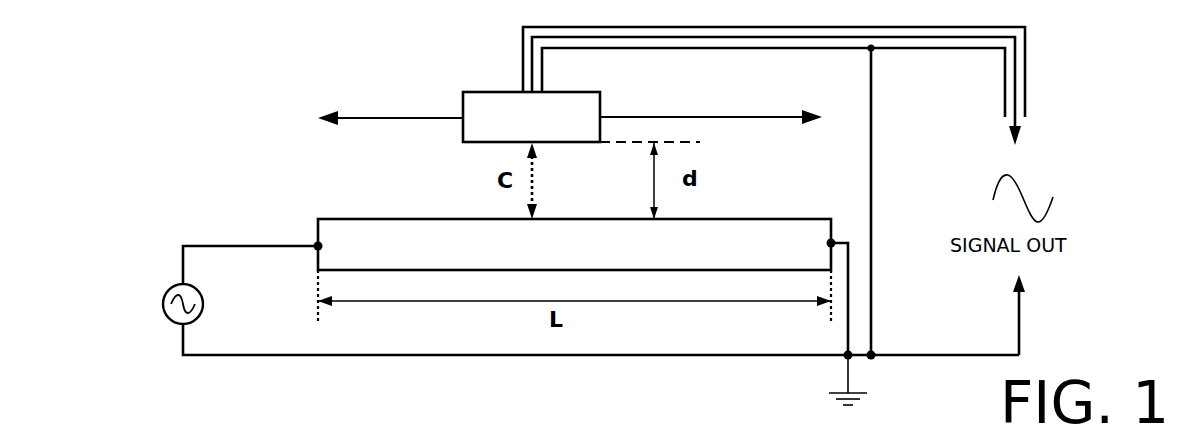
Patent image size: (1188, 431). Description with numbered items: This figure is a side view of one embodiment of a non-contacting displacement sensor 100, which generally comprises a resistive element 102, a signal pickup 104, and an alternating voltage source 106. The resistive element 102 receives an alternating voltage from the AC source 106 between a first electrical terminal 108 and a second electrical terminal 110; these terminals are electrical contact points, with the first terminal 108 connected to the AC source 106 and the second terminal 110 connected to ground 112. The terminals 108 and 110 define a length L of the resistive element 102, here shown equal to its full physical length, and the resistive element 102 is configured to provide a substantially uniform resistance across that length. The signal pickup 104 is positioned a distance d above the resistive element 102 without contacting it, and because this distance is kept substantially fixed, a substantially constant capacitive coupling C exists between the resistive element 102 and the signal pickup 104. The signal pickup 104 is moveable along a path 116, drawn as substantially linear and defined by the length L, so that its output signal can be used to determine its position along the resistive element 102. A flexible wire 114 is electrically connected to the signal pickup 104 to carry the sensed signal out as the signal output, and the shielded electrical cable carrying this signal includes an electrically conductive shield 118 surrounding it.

The sensor 100 is at (222, 57).
The resistive element 102 is at (338, 219).
The signal pickup 104 is at (558, 92).
The alternating voltage source 106 is at (176, 322).
The first electrical terminal 108 is at (316, 244).
The second electrical terminal 110 is at (833, 241).
The ground 112 is at (846, 372).
The wire 114 is at (1017, 124).
The path 116 is at (378, 117).
The electrically conductive shield 118 is at (1026, 80).